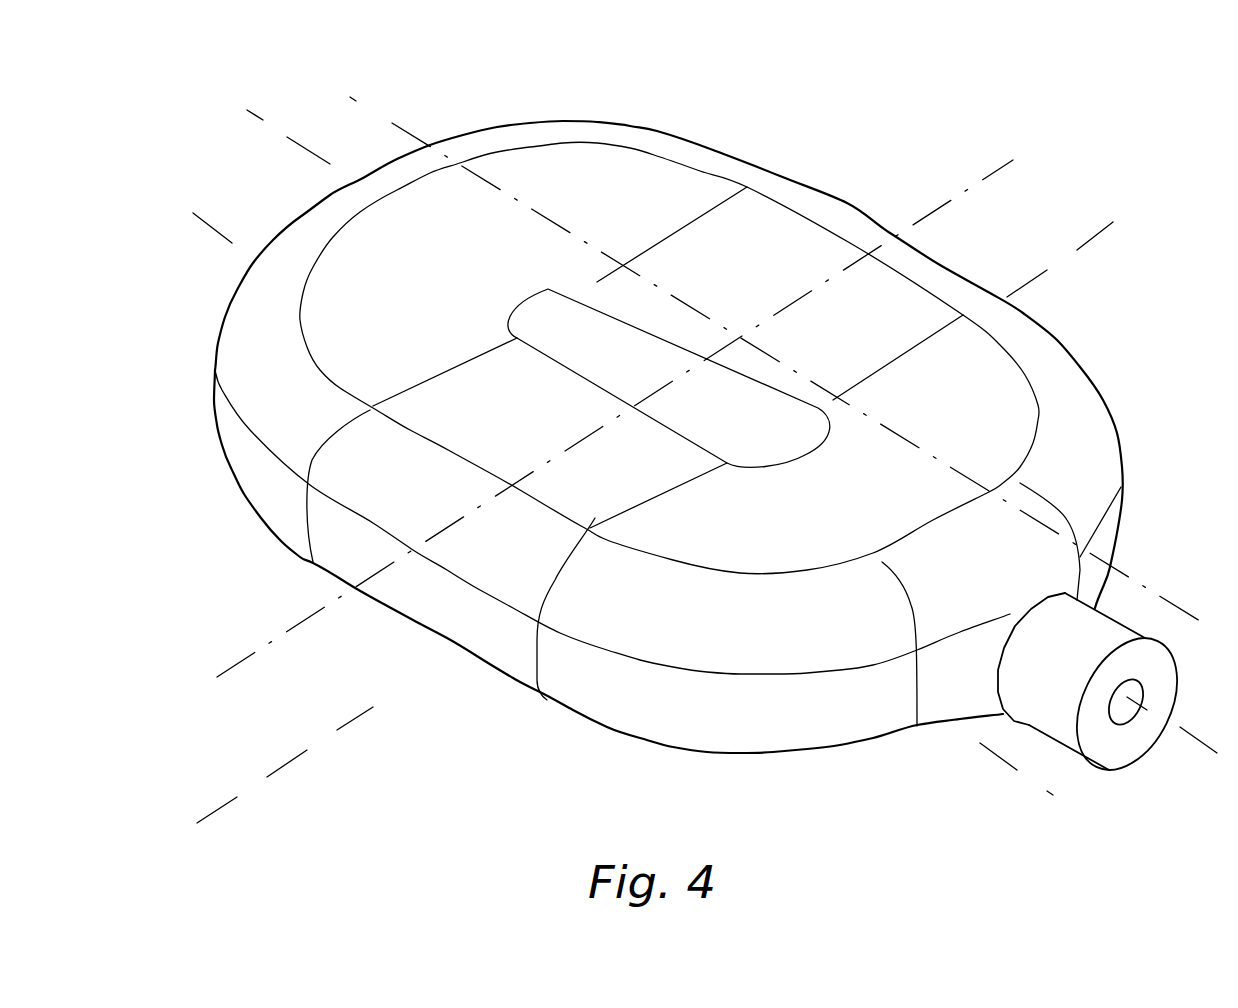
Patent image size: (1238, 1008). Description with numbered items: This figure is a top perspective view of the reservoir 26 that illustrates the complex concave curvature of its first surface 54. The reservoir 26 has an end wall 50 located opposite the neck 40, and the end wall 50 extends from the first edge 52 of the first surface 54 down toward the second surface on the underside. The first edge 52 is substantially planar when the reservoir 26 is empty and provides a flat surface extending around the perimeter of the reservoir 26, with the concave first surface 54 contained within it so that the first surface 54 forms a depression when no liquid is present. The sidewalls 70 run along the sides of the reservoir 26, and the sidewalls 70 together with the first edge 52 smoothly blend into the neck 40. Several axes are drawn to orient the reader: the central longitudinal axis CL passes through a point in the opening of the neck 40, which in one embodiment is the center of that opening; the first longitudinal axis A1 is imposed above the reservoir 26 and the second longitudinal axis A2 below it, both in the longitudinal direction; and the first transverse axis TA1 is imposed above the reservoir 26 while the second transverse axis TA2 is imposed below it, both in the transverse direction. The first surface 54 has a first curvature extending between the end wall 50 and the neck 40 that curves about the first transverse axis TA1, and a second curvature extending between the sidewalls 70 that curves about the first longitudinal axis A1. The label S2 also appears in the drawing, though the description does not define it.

The reservoir 26 is at (759, 796).
The neck 40 is at (1073, 649).
The end wall 50 is at (331, 196).
The first edge 52 is at (822, 207).
The first surface 54 is at (682, 204).
The sidewalls 70 is at (947, 268).
The first longitudinal axis A1 is at (391, 120).
The second longitudinal axis A2 is at (195, 214).
The central longitudinal axis CL is at (289, 138).
The first transverse axis TA1 is at (985, 172).
The second transverse axis TA2 is at (1085, 240).
The second surface S2 is at (383, 440).